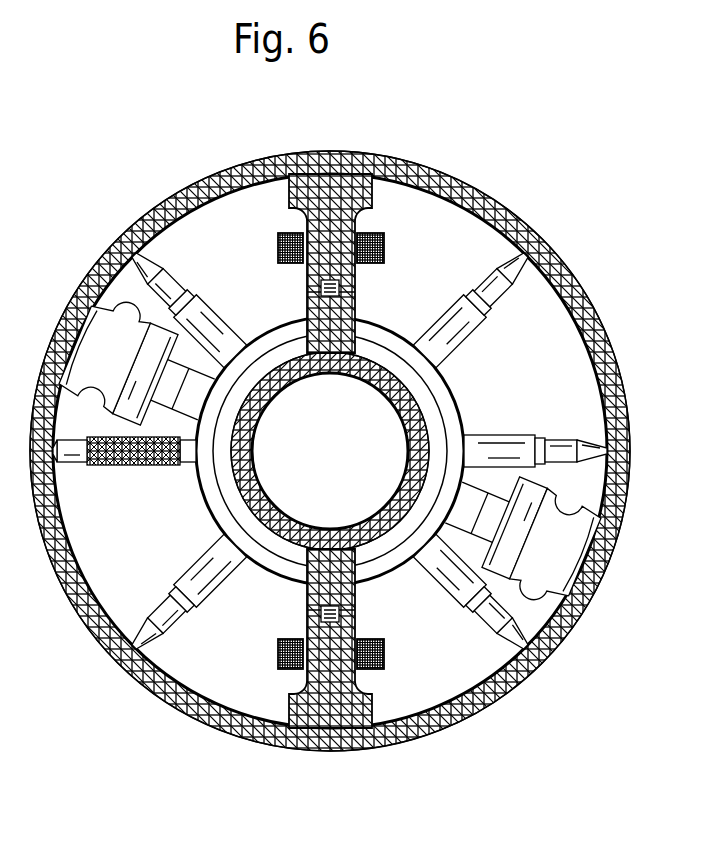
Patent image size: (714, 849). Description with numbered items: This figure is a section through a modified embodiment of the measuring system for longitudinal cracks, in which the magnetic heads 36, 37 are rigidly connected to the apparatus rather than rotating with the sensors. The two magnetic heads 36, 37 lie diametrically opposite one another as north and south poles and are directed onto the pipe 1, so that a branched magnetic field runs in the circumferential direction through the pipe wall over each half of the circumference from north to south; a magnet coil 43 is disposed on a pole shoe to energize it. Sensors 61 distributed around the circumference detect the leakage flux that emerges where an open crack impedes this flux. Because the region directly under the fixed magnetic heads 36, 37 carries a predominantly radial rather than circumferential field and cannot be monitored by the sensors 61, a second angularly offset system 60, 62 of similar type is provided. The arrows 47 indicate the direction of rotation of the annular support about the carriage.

The pipe 1 is at (330, 471).
The magnetic head 36 is at (363, 173).
The magnetic head 37 is at (360, 723).
The magnet coil 43 is at (375, 668).
The arrows 47 is at (93, 577).
The second angularly offset system 60 is at (100, 318).
The sensors 61 is at (523, 252).
The second angularly offset system 62 is at (582, 523).